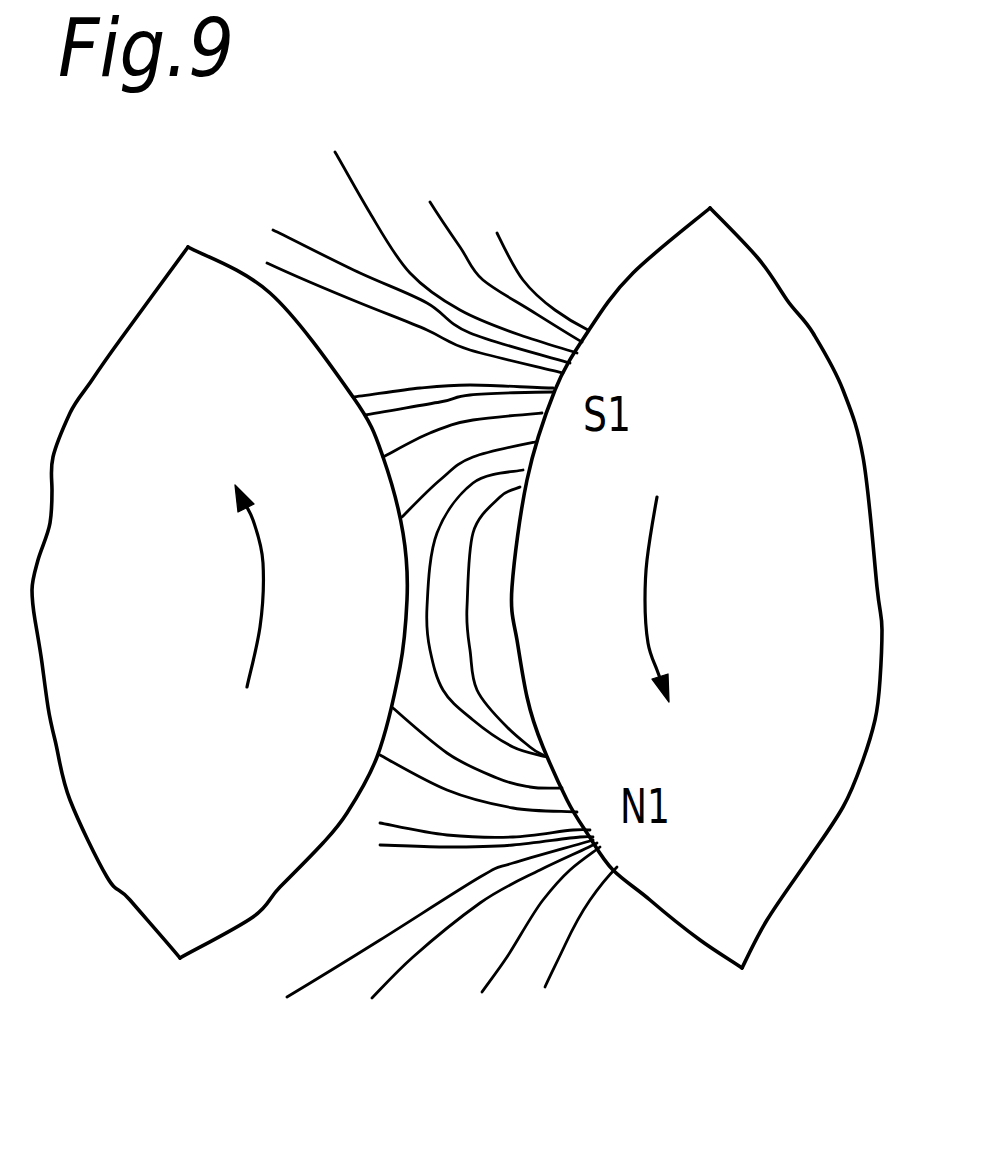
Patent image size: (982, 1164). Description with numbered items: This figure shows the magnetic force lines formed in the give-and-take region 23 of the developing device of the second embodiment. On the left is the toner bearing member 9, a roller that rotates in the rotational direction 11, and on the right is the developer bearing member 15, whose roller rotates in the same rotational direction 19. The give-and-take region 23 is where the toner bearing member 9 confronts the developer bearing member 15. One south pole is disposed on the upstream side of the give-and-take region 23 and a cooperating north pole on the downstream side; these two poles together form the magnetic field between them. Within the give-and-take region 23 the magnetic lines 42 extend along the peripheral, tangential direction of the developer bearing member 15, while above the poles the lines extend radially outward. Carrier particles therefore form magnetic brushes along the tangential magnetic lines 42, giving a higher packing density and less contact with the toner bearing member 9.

The toner bearing member 9 is at (157, 355).
The developer bearing member 15 is at (760, 312).
The rotational direction of the toner bearing member 11 is at (260, 592).
The rotational direction of the developer bearing member 19 is at (645, 575).
The magnetic lines 42 is at (467, 607).
The give-and-take region 23 is at (455, 732).